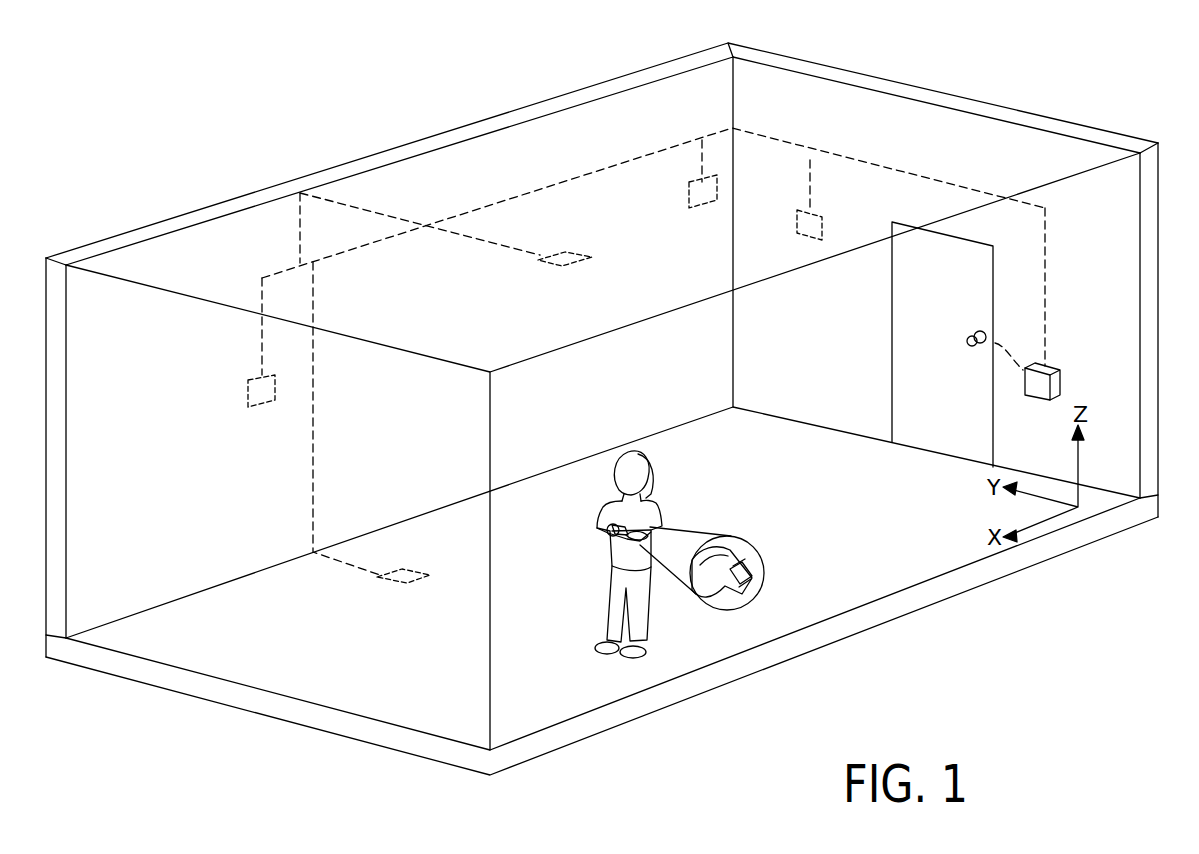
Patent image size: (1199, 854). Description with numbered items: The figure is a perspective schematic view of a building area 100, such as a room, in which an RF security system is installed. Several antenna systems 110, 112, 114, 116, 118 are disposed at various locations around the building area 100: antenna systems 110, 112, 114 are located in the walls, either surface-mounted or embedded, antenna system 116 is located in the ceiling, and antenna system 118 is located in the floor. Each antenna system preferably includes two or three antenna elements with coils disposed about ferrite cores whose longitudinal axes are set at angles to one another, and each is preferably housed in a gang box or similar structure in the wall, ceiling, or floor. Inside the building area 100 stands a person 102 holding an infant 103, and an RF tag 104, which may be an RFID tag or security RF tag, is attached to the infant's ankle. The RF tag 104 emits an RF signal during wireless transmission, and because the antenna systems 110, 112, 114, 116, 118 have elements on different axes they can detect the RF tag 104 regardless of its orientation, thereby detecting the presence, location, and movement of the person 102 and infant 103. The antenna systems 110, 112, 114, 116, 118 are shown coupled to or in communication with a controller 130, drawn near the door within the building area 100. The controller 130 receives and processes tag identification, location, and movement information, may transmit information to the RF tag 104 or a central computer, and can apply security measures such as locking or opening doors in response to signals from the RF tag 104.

The building area 100 is at (1025, 58).
The person 102 is at (652, 512).
The infant 103 is at (607, 522).
The RF tag 104 is at (742, 576).
The antenna system 110 is at (264, 394).
The antenna system 112 is at (700, 200).
The antenna system 114 is at (800, 231).
The antenna system 116 is at (583, 261).
The antenna system 118 is at (418, 585).
The controller 130 is at (1033, 383).